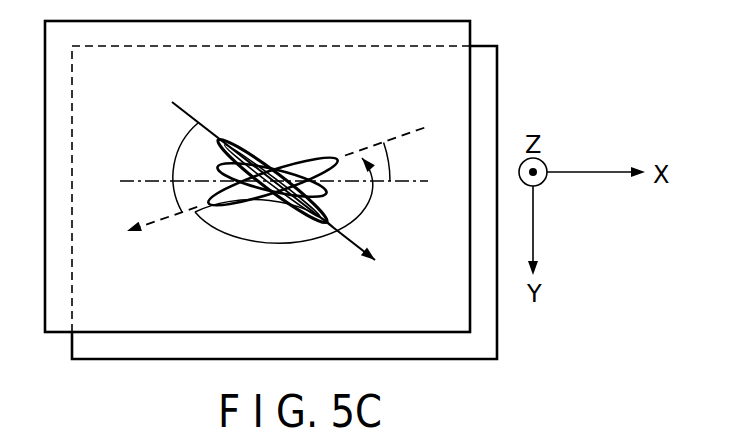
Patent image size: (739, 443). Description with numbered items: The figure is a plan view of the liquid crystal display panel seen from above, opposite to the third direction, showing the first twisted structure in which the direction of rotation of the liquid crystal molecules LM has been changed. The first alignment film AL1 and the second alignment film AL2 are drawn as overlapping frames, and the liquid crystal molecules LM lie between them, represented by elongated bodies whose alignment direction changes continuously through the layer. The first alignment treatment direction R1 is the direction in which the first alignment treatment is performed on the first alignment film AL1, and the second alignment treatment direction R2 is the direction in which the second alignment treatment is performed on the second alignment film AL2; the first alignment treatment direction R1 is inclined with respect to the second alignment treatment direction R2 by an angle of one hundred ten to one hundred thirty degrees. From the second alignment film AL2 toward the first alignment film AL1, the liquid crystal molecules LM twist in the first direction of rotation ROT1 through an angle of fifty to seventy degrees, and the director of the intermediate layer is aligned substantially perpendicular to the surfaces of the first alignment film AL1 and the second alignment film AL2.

The first alignment film AL1 is at (497, 89).
The second alignment film AL2 is at (470, 33).
The liquid crystal molecules LM is at (288, 166).
The first alignment treatment direction R1 is at (168, 222).
The second alignment treatment direction R2 is at (355, 244).
The first direction of rotation ROT1 is at (368, 212).